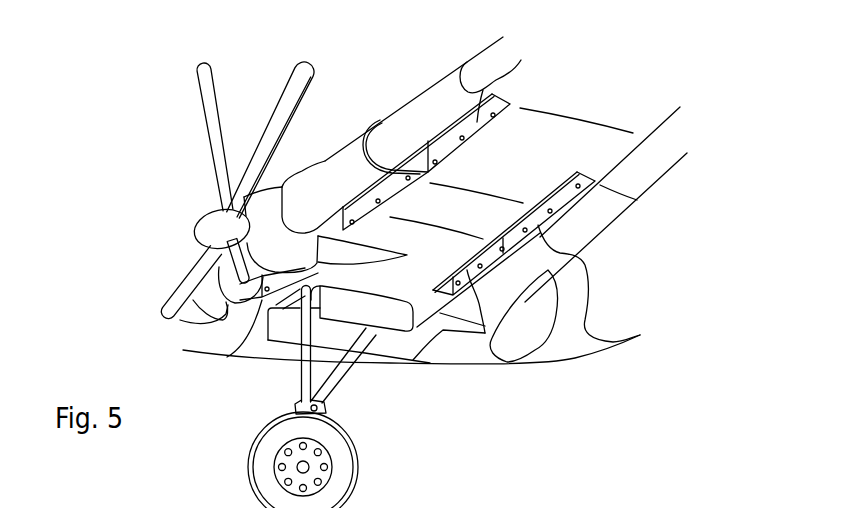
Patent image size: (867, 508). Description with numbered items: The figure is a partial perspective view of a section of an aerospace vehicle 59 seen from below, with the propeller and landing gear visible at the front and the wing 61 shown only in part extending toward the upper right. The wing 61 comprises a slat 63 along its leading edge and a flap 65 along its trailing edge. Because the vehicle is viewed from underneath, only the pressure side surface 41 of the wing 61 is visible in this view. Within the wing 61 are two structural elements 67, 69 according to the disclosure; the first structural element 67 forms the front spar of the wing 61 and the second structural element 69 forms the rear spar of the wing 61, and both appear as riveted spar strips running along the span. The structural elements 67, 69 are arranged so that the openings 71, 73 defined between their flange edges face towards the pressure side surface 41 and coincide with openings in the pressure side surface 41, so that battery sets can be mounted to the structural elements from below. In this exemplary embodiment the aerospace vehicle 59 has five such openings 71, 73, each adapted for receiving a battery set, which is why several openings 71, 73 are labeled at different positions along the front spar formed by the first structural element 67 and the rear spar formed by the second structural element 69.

The pressure side surface 41 is at (572, 98).
The aerospace vehicle 59 is at (111, 128).
The wing 61 is at (663, 212).
The slat 63 is at (357, 158).
The flap 65 is at (600, 240).
The first structural element 67 is at (521, 60).
The second structural element 69 is at (508, 366).
The opening 71 is at (429, 142).
The opening 73 is at (446, 332).